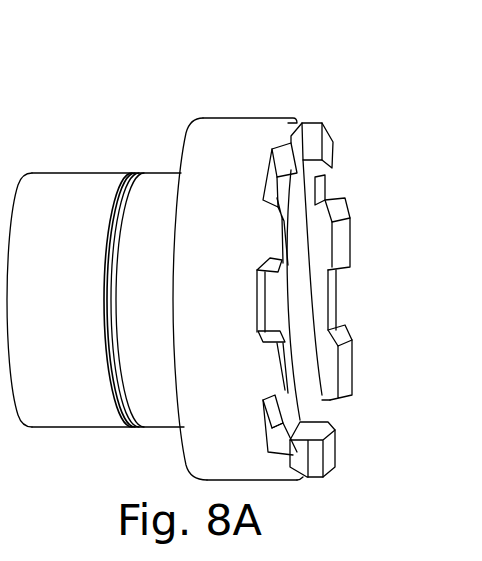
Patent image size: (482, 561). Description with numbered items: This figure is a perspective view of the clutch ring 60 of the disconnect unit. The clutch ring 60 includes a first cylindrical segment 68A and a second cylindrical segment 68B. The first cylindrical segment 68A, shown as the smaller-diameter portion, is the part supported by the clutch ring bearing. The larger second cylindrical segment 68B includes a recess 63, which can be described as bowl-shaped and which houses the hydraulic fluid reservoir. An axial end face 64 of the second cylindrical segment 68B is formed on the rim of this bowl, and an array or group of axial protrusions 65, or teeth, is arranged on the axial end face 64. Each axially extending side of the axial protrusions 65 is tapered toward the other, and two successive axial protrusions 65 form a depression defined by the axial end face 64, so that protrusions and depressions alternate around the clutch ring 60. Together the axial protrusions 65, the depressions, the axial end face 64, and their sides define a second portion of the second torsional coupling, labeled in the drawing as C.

The clutch ring 60 is at (173, 103).
The first cylindrical segment 68A is at (77, 193).
The second cylindrical segment 68B is at (240, 130).
The recess 63 is at (303, 297).
The axial end face 64 is at (325, 185).
The axial protrusions 65 is at (345, 232).
The direction C is at (471, 285).